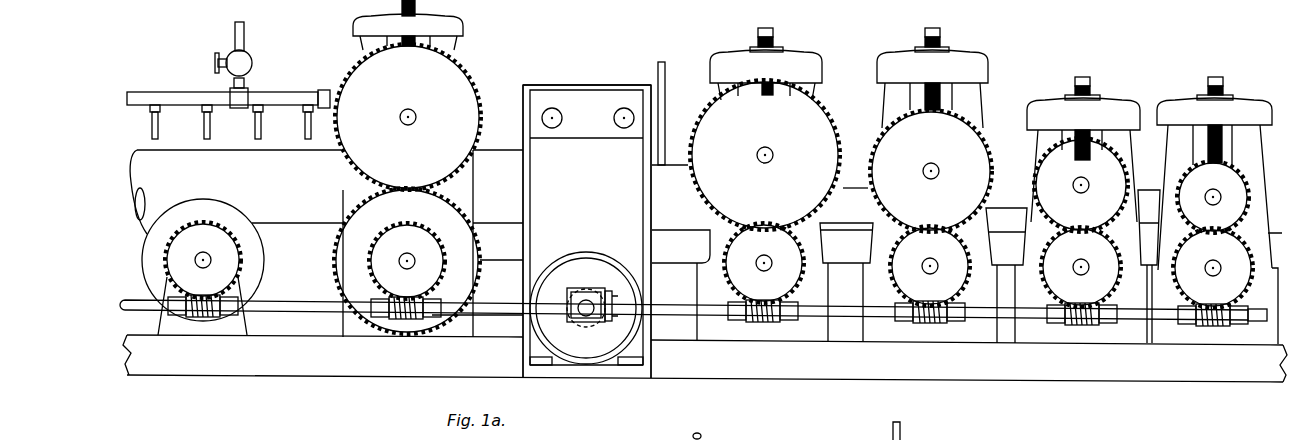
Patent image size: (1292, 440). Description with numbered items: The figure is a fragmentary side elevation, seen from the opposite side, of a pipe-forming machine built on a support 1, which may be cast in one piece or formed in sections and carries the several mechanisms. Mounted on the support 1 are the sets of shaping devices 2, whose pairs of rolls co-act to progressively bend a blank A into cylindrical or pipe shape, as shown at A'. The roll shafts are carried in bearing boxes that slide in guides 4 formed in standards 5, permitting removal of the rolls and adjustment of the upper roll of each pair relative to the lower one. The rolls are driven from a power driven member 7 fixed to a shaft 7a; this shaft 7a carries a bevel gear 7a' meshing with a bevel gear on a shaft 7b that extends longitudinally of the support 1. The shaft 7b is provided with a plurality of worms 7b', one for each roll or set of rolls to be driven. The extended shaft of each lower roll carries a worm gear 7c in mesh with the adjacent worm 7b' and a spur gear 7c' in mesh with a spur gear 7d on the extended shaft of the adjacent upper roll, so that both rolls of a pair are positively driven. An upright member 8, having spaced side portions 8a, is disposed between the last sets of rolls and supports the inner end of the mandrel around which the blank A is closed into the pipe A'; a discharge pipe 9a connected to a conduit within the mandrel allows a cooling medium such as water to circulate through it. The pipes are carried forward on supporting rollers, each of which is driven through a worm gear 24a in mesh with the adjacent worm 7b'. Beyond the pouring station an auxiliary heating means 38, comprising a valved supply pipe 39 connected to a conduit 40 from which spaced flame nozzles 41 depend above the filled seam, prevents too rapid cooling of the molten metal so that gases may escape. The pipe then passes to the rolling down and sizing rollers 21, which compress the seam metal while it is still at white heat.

The support 1 is at (850, 372).
The sets of shaping devices 2 is at (1138, 155).
The guides 4 is at (910, 93).
The standards 5 is at (970, 100).
The power driven member 7 is at (613, 266).
The shaft 7a is at (586, 345).
The bevel gear 7a' is at (625, 346).
The shaft 7b is at (693, 334).
The worms 7b' is at (703, 323).
The worm gear 7c is at (988, 265).
The spur gear 7c' is at (407, 261).
The spur gear 7d is at (450, 82).
The upright member 8 is at (586, 227).
The side portions 8a is at (537, 198).
The discharge pipe 9a is at (665, 75).
The rolling down and sizing rollers 21 is at (477, 243).
The worm gear 24a is at (227, 235).
The auxiliary heating means 38 is at (253, 86).
The valved supply pipe 39 is at (240, 62).
The conduit 40 is at (299, 98).
The nozzles 41 is at (204, 126).
The blank A is at (1006, 262).
The pipe A' is at (297, 263).